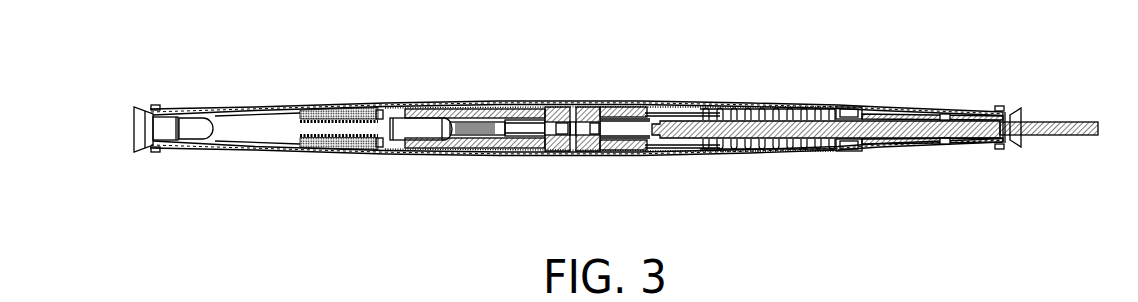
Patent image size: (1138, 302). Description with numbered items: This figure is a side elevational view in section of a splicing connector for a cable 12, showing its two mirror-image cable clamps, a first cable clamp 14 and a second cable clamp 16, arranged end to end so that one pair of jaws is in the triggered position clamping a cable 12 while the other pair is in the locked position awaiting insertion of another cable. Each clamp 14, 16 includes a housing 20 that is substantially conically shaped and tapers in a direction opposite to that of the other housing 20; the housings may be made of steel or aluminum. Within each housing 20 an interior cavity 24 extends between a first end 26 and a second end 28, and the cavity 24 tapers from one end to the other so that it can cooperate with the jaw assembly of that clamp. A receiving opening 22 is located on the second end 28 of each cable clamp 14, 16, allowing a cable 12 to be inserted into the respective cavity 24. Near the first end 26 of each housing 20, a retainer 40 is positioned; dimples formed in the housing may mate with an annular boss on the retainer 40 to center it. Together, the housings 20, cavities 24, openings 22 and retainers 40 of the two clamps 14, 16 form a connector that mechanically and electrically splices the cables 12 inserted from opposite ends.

The cable 12 is at (1075, 137).
The first cable clamp 14 is at (264, 96).
The second cable clamp 16 is at (833, 93).
The housing 20 is at (342, 107).
The receiving opening 22 is at (137, 127).
The interior cavity 24 is at (276, 134).
The first end 26 is at (621, 165).
The second end 28 is at (953, 161).
The retainer 40 is at (546, 105).